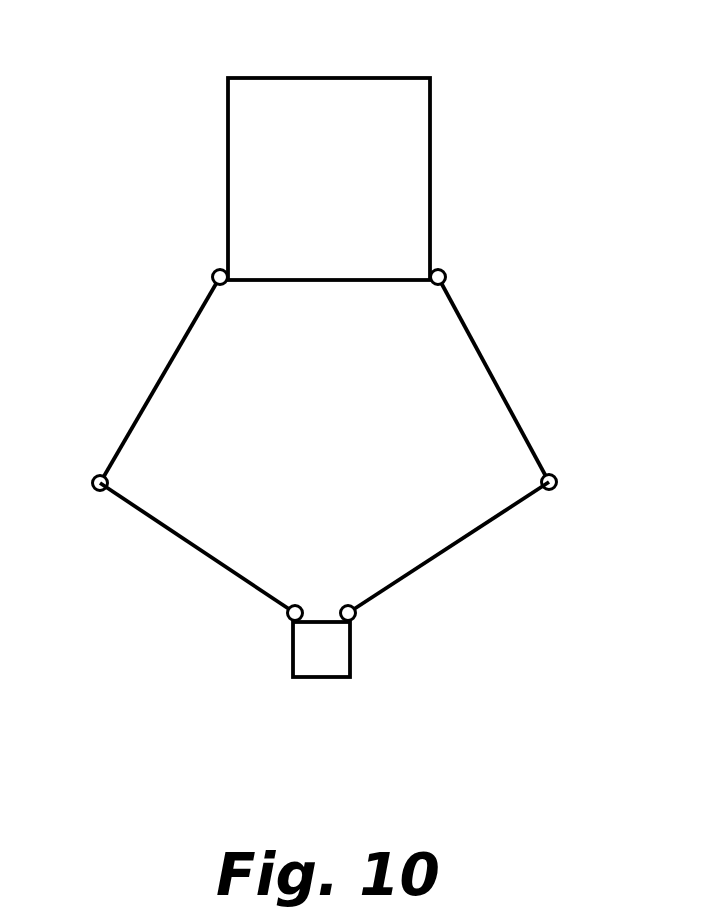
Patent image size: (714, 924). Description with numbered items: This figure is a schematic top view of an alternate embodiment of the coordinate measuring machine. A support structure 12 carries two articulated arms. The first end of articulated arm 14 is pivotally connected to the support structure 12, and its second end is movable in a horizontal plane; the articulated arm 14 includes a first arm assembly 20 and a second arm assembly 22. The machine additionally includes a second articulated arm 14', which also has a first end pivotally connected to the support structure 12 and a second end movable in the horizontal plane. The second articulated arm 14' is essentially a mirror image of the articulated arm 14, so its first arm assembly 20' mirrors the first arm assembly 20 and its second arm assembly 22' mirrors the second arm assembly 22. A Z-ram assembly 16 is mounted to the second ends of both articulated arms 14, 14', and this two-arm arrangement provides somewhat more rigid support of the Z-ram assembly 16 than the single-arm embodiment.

The support structure 12 is at (371, 78).
The articulated arm 14 is at (157, 446).
The second articulated arm 14' is at (506, 446).
The Z-ram assembly 16 is at (350, 655).
The first arm assembly 20 is at (155, 380).
The first arm assembly 20' is at (512, 380).
The second arm assembly 22 is at (201, 552).
The second arm assembly 22' is at (445, 551).